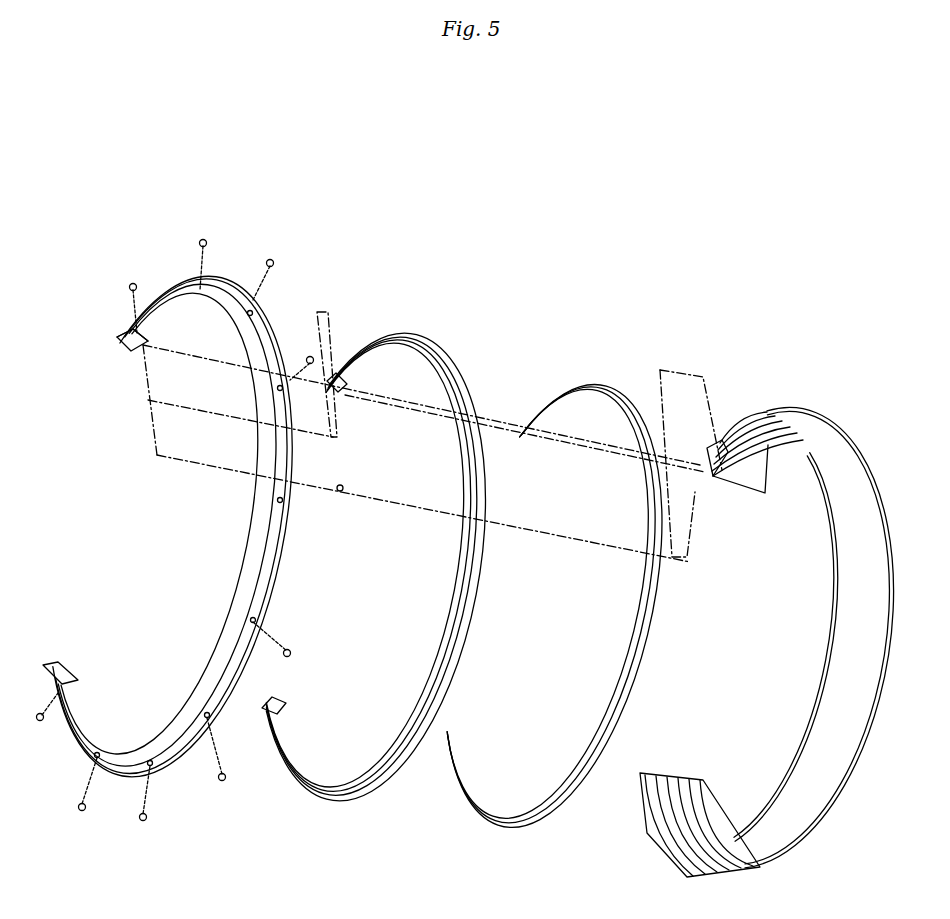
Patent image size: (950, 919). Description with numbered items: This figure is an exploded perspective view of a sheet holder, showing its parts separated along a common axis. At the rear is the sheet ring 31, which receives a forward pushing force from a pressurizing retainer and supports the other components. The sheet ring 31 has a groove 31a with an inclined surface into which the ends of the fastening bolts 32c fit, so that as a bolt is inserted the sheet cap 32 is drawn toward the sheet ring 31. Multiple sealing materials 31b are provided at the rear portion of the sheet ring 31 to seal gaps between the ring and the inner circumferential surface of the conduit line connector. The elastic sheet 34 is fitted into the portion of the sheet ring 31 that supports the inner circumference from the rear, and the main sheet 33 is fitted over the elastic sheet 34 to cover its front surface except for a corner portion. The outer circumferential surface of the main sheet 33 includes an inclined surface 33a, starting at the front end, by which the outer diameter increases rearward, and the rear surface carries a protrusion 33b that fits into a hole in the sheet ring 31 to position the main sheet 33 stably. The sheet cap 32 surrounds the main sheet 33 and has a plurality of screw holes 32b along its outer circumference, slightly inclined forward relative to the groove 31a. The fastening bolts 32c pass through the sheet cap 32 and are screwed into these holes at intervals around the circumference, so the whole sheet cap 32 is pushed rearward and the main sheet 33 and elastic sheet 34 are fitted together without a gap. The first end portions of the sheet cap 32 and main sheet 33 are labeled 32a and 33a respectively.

The sheet ring 31 is at (784, 353).
The groove 31a is at (716, 442).
The sealing materials 31b is at (752, 380).
The sheet cap 32 is at (224, 213).
The first end of outer ring 32a is at (132, 352).
The screw holes 32b is at (130, 328).
The fastening bolt 32c is at (199, 242).
The main sheet 33 is at (437, 281).
The inclined surface 33a is at (343, 378).
The protrusion 33b is at (346, 394).
The elastic sheet 34 is at (606, 316).